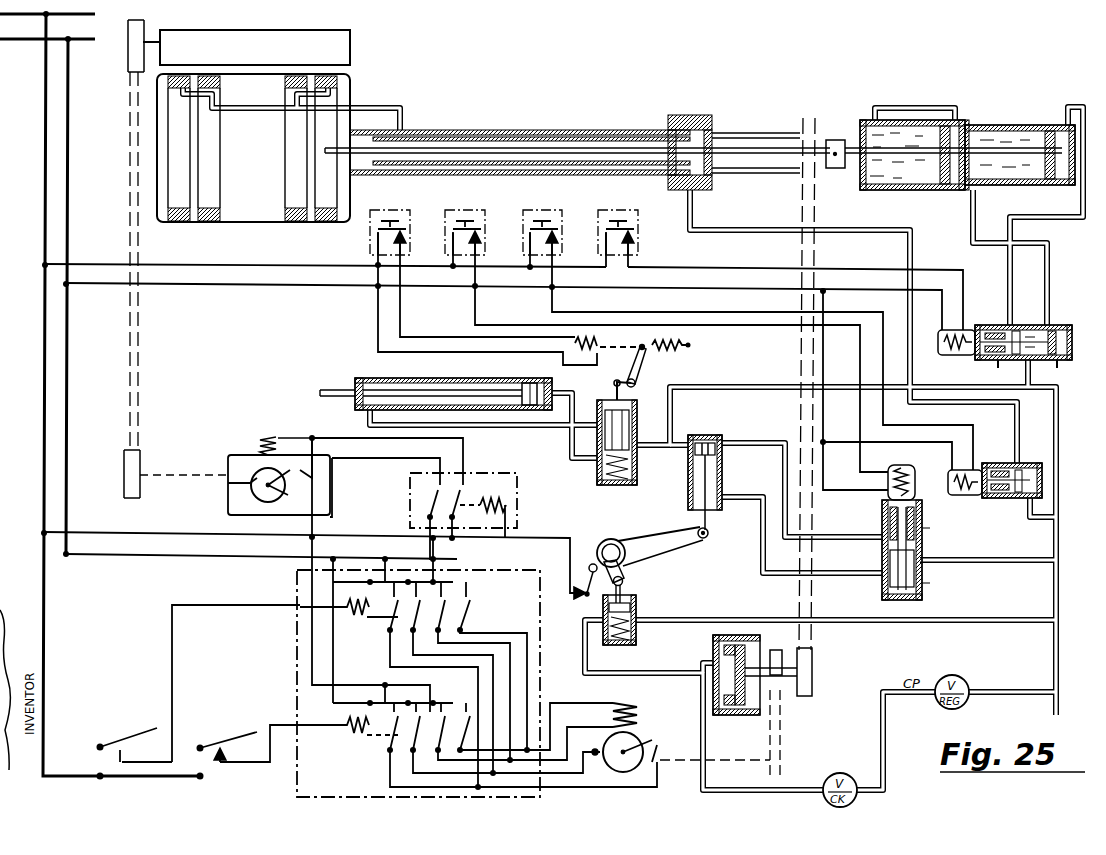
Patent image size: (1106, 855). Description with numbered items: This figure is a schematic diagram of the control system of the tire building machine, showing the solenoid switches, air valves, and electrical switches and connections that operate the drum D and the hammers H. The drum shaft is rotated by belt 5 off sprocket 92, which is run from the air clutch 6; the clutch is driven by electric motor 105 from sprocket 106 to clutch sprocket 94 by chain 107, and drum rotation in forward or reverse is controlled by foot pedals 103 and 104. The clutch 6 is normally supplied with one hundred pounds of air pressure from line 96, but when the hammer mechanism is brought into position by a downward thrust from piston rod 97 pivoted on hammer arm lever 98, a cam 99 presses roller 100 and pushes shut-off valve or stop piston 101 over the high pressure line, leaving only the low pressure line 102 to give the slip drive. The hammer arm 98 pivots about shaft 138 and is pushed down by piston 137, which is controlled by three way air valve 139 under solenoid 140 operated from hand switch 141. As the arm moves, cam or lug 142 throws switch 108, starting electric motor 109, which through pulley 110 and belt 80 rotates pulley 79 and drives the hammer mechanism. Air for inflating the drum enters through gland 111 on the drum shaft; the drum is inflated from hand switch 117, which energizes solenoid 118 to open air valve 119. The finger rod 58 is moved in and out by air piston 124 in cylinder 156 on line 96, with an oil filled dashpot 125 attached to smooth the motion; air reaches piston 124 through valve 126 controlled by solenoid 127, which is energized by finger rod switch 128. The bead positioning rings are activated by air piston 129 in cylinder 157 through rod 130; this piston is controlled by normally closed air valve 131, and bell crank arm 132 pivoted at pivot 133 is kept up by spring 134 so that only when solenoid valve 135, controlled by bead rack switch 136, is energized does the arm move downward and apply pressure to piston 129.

The hammers H is at (362, 44).
The tire building drum D is at (358, 96).
The pulley 79 is at (128, 60).
The belt 80 is at (130, 160).
The pulley 110 is at (124, 470).
The rod 58 is at (765, 135).
The gland 111 is at (702, 115).
The belt 5 is at (818, 198).
The oil filled dashpot 125 is at (908, 120).
The cylinder 156 is at (997, 125).
The air piston 124 is at (1050, 131).
The valve 126 is at (1052, 325).
The solenoid 127 is at (938, 355).
The air valve 119 is at (1005, 463).
The solenoid 118 is at (950, 495).
The solenoid 140 is at (901, 473).
The air valve 139 is at (922, 560).
The rod 130 is at (328, 388).
The cylinder 157 is at (408, 383).
The air piston 129 is at (528, 383).
The air valve 131 is at (597, 475).
The pivot 133 is at (644, 367).
The bell crank arm 132 is at (655, 350).
The spring 134 is at (692, 345).
The solenoid valve 135 is at (588, 340).
The piston 137 is at (708, 435).
The shaft 138 is at (612, 539).
The hammer arm lever 98 is at (680, 545).
The piston rod 97 is at (708, 532).
The cam 99 is at (628, 572).
The roller 100 is at (625, 580).
The switch 108 is at (578, 560).
The cam 142 is at (583, 597).
The shut-off valve 101 is at (632, 607).
The clutch 6 is at (713, 663).
The clutch sprocket 94 is at (775, 650).
The sprocket 92 is at (812, 670).
The chain 107 is at (782, 711).
The sprocket 106 is at (780, 752).
The low pressure line 102 is at (698, 710).
The high pressure air line 96 is at (1052, 655).
The electric motor 109 is at (252, 468).
The foot pedal 103 is at (135, 733).
The foot pedal 104 is at (240, 735).
The electric motor 105 is at (640, 772).
The bead rack switch 136 is at (380, 222).
The hand switch 141 is at (455, 222).
The hand switch 117 is at (531, 222).
The finger rod switch 128 is at (607, 222).